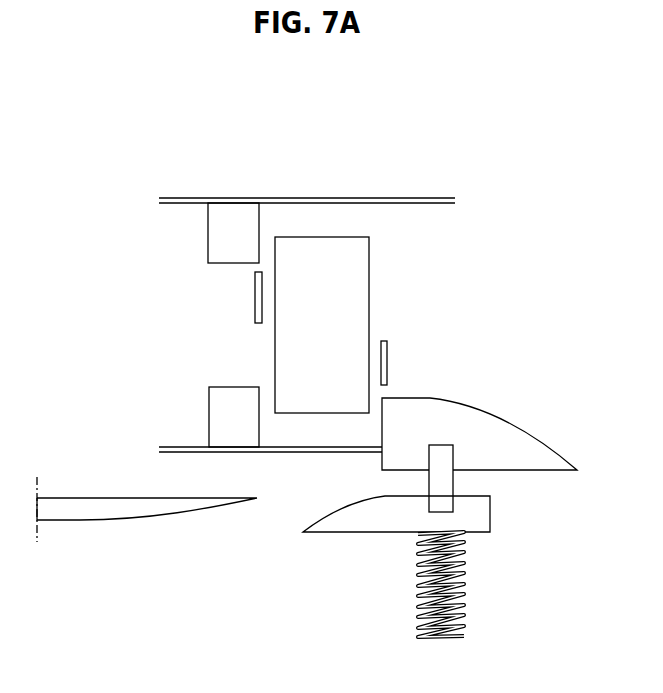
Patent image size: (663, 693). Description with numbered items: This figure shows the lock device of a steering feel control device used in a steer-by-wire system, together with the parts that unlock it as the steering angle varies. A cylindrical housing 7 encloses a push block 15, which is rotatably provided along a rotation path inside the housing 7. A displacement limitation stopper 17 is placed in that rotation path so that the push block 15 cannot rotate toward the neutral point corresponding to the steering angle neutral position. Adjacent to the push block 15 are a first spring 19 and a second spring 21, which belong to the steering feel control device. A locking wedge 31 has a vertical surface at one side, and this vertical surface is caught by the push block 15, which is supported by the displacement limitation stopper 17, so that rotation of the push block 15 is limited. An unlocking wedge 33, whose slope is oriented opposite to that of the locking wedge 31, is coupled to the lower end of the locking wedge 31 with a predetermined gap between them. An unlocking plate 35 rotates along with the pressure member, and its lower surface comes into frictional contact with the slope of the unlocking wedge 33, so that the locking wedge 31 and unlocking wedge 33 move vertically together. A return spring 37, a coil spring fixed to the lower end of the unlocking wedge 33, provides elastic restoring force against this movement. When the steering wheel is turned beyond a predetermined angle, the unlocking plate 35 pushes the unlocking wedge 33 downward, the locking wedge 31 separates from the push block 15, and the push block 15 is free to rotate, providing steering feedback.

The housing 7 is at (435, 200).
The push block 15 is at (320, 250).
The displacement limitation stopper 17 is at (230, 218).
The first spring 19 is at (253, 298).
The second spring 21 is at (386, 363).
The locking wedge 31 is at (515, 432).
The unlocking wedge 33 is at (480, 517).
The unlocking plate 35 is at (125, 515).
The return spring 37 is at (463, 590).